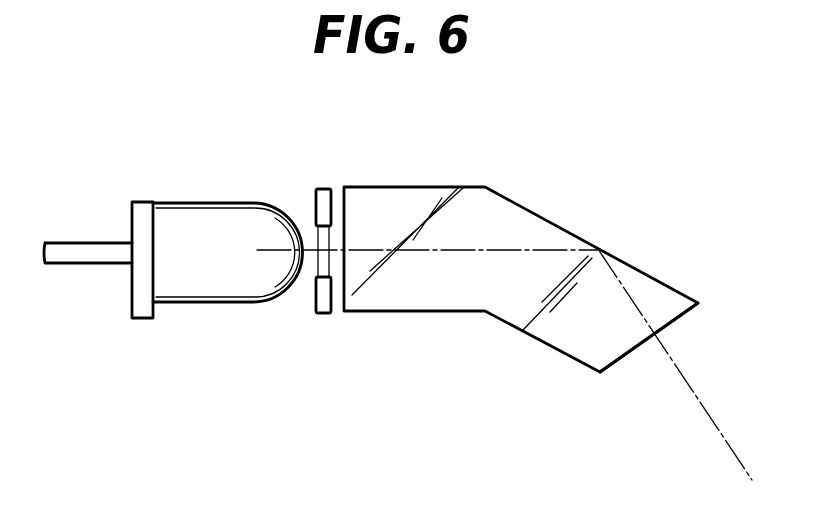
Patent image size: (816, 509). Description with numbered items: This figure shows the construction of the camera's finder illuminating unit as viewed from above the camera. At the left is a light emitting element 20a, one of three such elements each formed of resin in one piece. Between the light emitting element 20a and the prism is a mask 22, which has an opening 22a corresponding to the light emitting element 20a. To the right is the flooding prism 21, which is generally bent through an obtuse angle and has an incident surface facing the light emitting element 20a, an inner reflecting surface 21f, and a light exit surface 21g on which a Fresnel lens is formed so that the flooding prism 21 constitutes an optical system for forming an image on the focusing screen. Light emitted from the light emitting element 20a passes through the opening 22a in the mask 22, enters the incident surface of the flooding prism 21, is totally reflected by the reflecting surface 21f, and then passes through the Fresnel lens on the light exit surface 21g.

The light emitting element 20a is at (220, 210).
The mask 22 is at (295, 239).
The opening 22a is at (320, 265).
The flooding prism 21 is at (521, 275).
The reflecting surface 21f is at (522, 203).
The light exit surface 21g is at (620, 360).